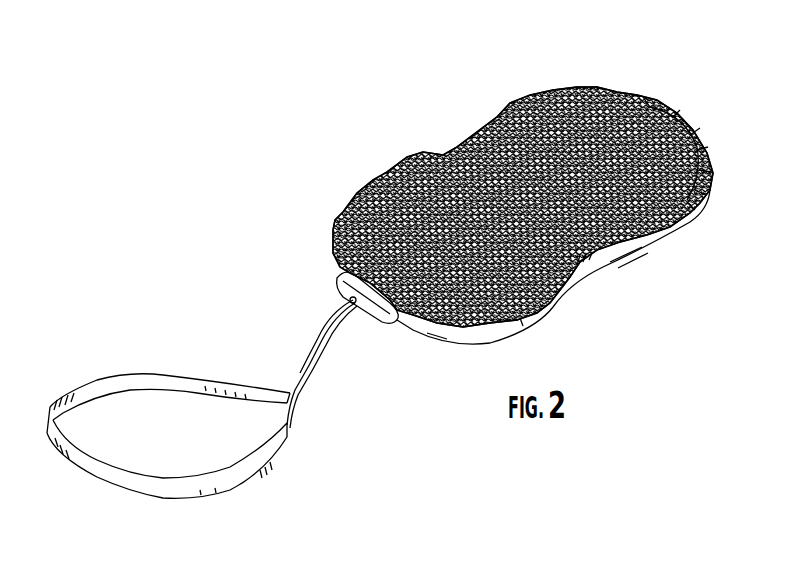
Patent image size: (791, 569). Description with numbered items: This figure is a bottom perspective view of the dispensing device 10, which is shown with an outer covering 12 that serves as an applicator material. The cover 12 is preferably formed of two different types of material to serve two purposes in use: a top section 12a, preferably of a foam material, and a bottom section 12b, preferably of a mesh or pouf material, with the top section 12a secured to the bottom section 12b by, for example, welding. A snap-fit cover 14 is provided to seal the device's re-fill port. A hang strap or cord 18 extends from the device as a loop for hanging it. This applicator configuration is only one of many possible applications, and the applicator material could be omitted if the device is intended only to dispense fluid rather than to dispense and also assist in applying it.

The dispensing device 10 is at (433, 110).
The outer covering 12 is at (638, 84).
The top section 12a is at (598, 262).
The bottom section 12b is at (679, 120).
The snap-fit cover 14 is at (376, 313).
The hang strap 18 is at (158, 373).